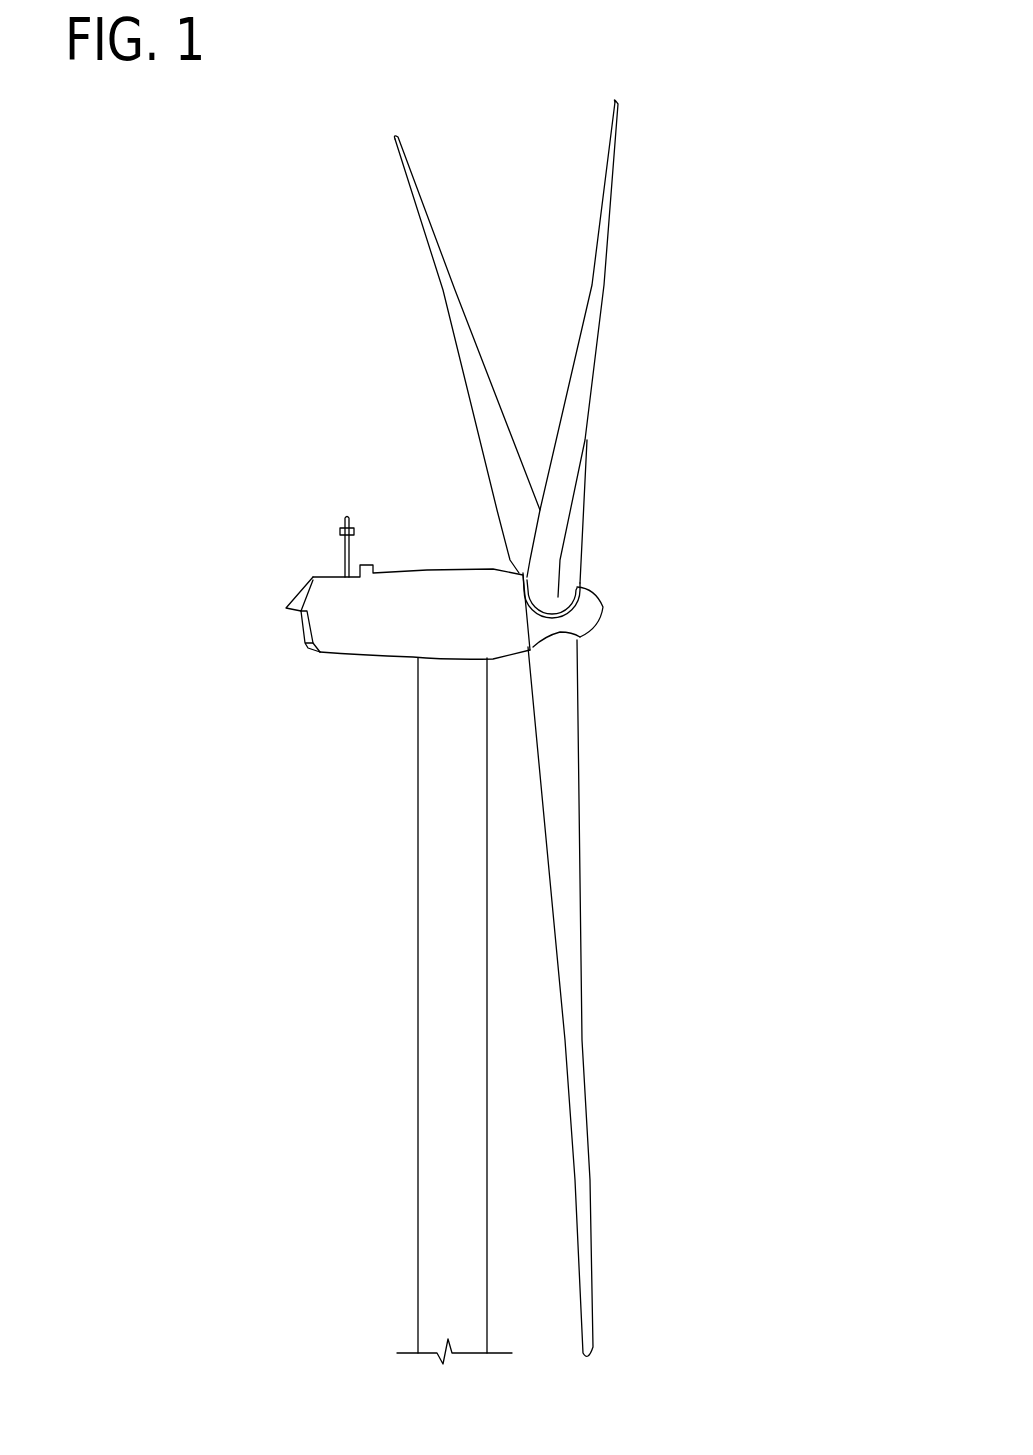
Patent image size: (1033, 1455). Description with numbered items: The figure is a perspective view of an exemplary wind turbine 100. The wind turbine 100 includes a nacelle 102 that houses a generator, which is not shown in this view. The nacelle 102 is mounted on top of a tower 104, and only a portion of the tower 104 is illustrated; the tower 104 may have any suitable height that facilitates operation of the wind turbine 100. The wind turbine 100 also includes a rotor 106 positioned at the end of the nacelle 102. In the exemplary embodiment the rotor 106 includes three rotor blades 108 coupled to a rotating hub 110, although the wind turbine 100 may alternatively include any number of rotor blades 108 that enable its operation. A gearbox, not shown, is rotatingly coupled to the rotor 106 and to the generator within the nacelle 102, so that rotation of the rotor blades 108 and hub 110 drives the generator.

The wind turbine 100 is at (270, 184).
The nacelle 102 is at (330, 668).
The tower 104 is at (418, 953).
The rotor 106 is at (680, 324).
The rotor blades 108 is at (437, 232).
The rotating hub 110 is at (600, 627).